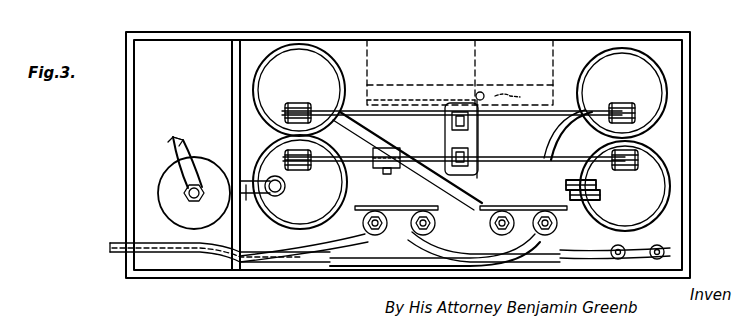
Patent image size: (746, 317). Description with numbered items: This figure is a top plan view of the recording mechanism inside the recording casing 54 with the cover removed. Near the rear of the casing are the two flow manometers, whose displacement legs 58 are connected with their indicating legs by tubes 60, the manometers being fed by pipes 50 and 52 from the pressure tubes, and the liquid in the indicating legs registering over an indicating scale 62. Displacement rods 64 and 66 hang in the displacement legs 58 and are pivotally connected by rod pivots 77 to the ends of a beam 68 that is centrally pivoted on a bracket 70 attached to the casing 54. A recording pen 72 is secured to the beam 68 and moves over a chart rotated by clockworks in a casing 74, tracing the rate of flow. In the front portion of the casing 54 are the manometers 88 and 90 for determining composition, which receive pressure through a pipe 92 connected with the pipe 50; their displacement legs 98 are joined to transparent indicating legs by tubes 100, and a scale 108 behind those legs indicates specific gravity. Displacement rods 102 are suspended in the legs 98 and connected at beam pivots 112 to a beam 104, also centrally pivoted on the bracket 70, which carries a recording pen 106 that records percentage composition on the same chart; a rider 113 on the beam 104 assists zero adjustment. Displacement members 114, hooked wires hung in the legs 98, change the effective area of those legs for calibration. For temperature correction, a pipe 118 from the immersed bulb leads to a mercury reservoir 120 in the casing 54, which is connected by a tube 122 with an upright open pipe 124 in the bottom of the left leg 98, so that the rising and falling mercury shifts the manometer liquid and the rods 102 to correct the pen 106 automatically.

The recording casing 54 is at (672, 36).
The displacement legs 58 is at (330, 60).
The displacement legs 98 is at (270, 160).
The displacement rod 64 is at (306, 104).
The displacement rod 66 is at (628, 104).
The rod pivots 77 is at (290, 103).
The beam pivots 112 is at (312, 152).
The beam 68 is at (382, 110).
The beam 104 is at (258, 286).
The bracket 70 is at (462, 136).
The casing 74 is at (535, 52).
The recording pen 106 is at (483, 92).
The recording pen 72 is at (516, 95).
The tubes 60 is at (378, 135).
The rider 113 is at (396, 150).
The mercury reservoir 120 is at (168, 178).
The pipe 118 is at (180, 138).
The upright open pipe 124 is at (268, 176).
The displacement rods 102 is at (292, 188).
The tube 122 is at (248, 200).
The displacement members 114 is at (228, 205).
The pipe 92 is at (220, 262).
The manometer 88 is at (423, 236).
The manometer 90 is at (378, 236).
The indicating scale 62 is at (524, 232).
The scale 108 is at (450, 240).
The tubes 100 is at (350, 268).
The pipe 50 is at (566, 264).
The pipe 52 is at (660, 246).